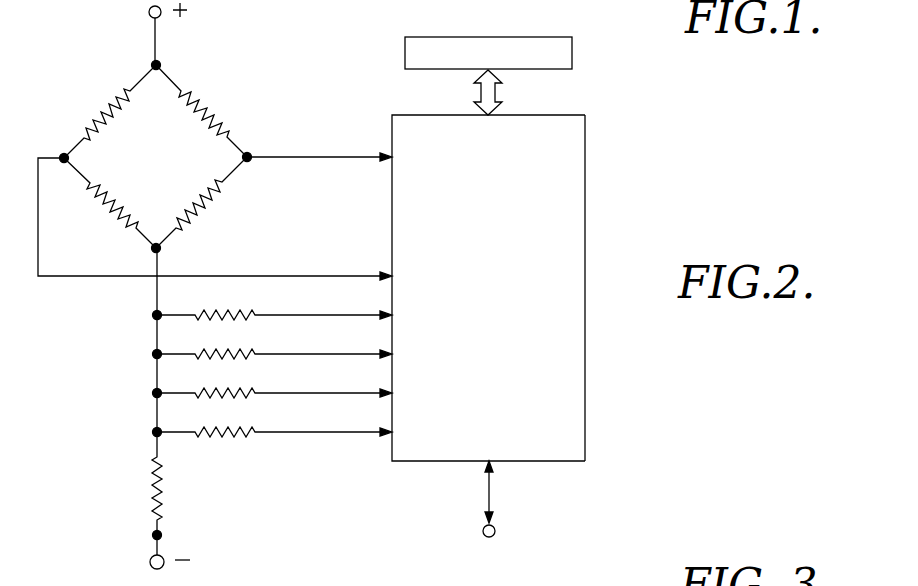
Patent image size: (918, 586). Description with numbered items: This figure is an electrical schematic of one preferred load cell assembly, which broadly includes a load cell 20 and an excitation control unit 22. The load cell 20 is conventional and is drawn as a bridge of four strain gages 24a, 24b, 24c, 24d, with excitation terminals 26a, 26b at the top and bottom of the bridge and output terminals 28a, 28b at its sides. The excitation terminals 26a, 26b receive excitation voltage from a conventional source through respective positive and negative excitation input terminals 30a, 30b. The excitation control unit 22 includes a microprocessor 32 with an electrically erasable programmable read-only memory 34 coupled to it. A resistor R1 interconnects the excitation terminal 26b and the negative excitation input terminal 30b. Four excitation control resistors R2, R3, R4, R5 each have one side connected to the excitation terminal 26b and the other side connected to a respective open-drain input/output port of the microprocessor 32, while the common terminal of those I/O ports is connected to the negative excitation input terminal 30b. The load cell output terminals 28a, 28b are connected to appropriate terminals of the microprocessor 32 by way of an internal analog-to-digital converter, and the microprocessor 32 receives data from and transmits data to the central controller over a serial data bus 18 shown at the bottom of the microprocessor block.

The serial data bus 18 is at (491, 495).
The load cell 20 is at (92, 112).
The excitation control unit 22 is at (614, 233).
The strain gage 24a is at (105, 118).
The strain gage 24b is at (200, 100).
The strain gage 24c is at (100, 195).
The strain gage 24d is at (213, 190).
The excitation terminal 26a is at (160, 66).
The excitation terminal 26b is at (160, 250).
The output terminal 28a is at (65, 162).
The output terminal 28b is at (249, 154).
The positive excitation input terminal 30a is at (149, 12).
The negative excitation input terminal 30b is at (150, 565).
The microprocessor 32 is at (586, 405).
The electrically erasable programmable read-only memory 34 is at (573, 50).
The resistor R1 is at (178, 394).
The excitation control resistor R2 is at (273, 300).
The excitation control resistor R3 is at (273, 339).
The excitation control resistor R4 is at (273, 379).
The excitation control resistor R5 is at (273, 418).